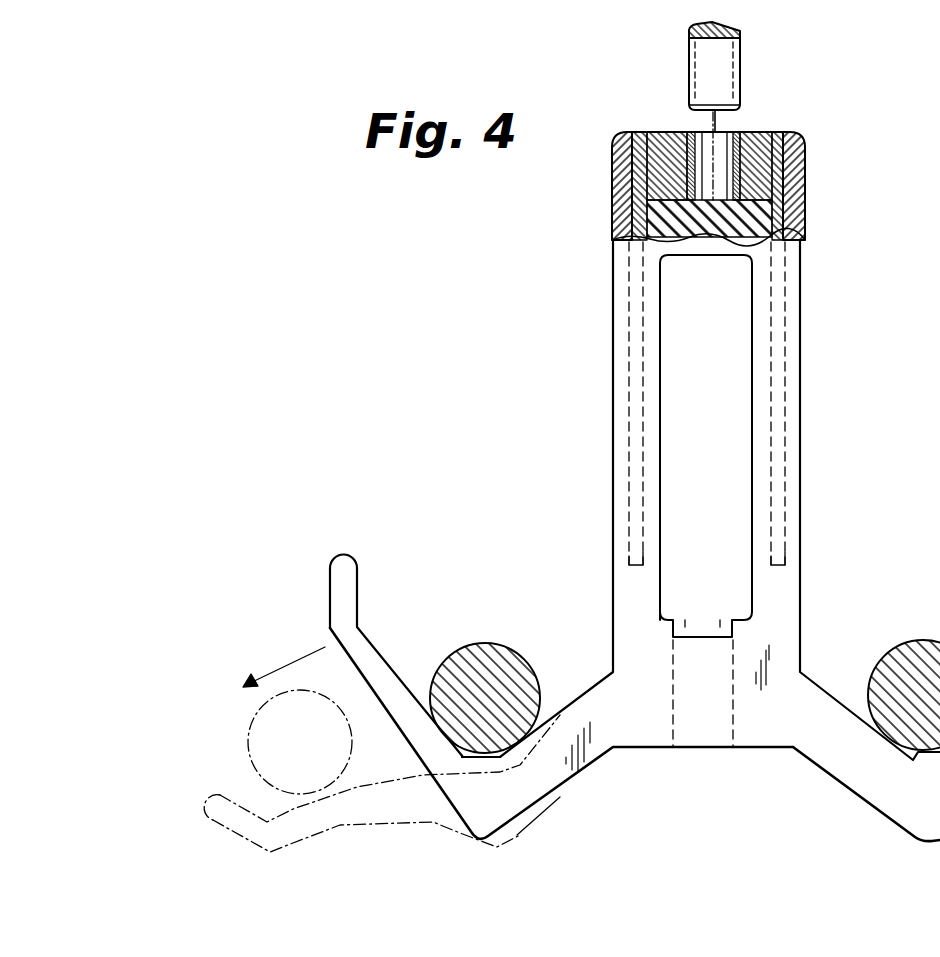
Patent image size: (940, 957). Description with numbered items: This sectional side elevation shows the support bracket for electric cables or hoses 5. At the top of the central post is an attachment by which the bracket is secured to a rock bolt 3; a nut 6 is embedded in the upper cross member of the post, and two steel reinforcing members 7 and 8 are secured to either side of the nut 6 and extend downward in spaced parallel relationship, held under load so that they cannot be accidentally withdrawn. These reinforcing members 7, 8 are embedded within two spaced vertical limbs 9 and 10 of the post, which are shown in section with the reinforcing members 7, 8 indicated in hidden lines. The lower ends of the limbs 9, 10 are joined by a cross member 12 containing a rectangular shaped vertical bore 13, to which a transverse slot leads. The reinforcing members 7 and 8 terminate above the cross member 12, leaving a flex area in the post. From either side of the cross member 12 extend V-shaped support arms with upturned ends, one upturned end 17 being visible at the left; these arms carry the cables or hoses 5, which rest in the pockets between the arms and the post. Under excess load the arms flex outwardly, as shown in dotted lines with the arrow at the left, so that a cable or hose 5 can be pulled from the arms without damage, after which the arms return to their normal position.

The rock bolt 3 is at (688, 70).
The nut 6 is at (761, 132).
The steel reinforcing member 7 is at (633, 298).
The steel reinforcing member 8 is at (786, 318).
The vertical limb 9 is at (613, 403).
The vertical limb 10 is at (800, 403).
The cross member 12 is at (763, 747).
The vertical bore 13 is at (697, 747).
The upturned end 17 is at (357, 580).
The cables or hoses 5 is at (244, 742).